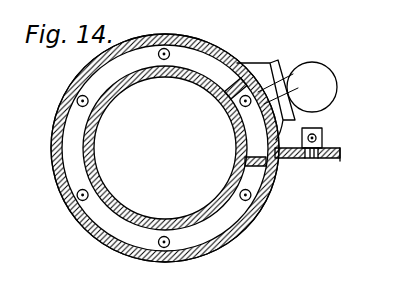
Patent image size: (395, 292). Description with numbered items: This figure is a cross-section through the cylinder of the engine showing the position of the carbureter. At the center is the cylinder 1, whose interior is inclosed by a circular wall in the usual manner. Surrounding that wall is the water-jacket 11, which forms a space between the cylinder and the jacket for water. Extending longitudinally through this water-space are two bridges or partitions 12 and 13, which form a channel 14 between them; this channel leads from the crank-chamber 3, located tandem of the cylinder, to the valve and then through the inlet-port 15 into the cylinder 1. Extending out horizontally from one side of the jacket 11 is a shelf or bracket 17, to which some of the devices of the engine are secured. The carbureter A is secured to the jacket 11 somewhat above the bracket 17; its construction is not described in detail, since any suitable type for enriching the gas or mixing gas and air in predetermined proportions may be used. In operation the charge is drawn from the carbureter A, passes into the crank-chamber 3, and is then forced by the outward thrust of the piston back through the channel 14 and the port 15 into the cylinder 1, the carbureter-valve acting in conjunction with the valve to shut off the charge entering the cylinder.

The cylinder 1 is at (165, 148).
The crank-chamber 3 is at (165, 148).
The water-jacket 11 is at (118, 245).
The bridge or partition 12 is at (238, 70).
The bridge or partition 13 is at (266, 166).
The channel 14 is at (268, 116).
The inlet-port 15 is at (281, 90).
The shelf or bracket 17 is at (332, 158).
The carbureter A is at (330, 78).